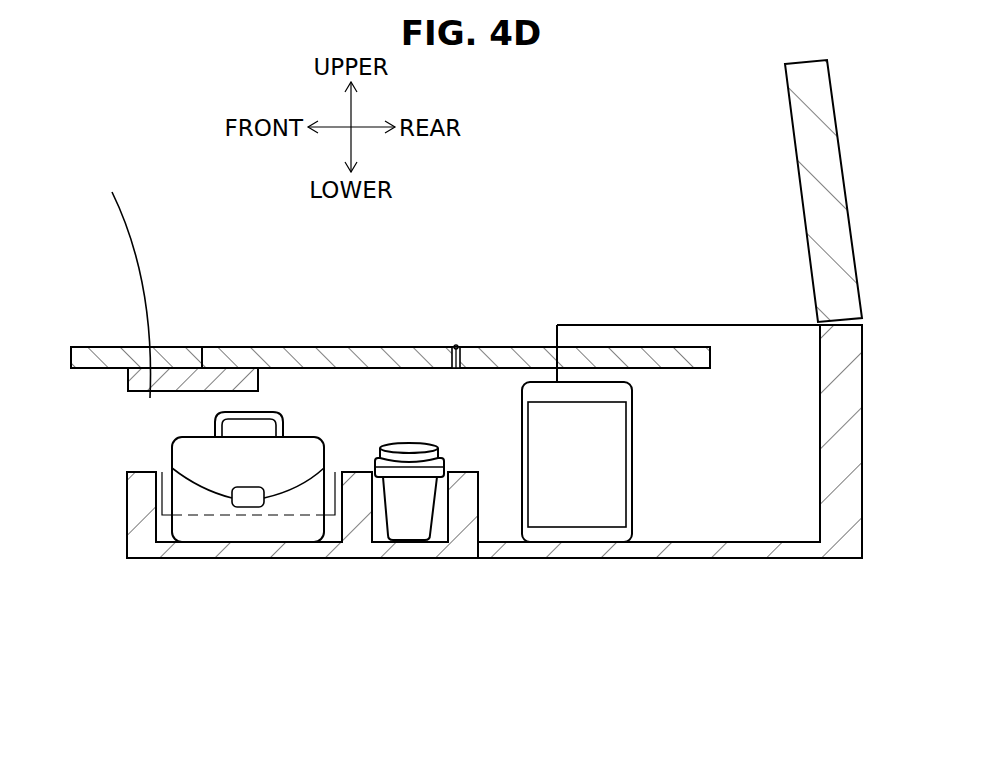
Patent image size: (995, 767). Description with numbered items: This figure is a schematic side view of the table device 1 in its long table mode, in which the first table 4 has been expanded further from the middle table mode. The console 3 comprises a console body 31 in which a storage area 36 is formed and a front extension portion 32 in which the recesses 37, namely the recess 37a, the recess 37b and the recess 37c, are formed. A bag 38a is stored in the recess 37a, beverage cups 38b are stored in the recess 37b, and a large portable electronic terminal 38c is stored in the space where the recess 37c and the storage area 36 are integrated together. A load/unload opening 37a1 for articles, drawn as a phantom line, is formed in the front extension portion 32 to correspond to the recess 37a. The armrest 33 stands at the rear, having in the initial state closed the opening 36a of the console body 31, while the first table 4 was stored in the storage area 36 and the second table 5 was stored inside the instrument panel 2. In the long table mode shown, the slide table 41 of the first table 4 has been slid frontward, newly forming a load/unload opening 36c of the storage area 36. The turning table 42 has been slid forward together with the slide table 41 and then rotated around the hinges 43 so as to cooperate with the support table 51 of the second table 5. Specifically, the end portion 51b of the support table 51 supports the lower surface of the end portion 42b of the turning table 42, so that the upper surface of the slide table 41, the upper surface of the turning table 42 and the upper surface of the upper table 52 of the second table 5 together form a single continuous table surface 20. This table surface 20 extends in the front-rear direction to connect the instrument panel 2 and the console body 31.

The table device 1 is at (463, 232).
The instrument panel 2 is at (135, 232).
The console 3 is at (440, 482).
The first table 4 is at (456, 296).
The second table 5 is at (108, 308).
The table surface 20 is at (310, 306).
The console body 31 is at (750, 550).
The front extension portion 32 is at (140, 514).
The armrest 33 is at (820, 130).
The storage area 36 is at (746, 468).
The opening 36a is at (613, 336).
The load/unload opening 36c is at (760, 385).
The recesses 37 is at (325, 568).
The recess 37a is at (333, 560).
The load/unload opening 37a1 is at (163, 478).
The recess 37b is at (445, 560).
The recess 37c is at (554, 558).
The bag 38a is at (303, 455).
The beverage cups 38b is at (412, 446).
The large portable electronic terminal 38c is at (633, 440).
The slide table 41 is at (521, 356).
The turning table 42 is at (327, 356).
The end portion 42b is at (237, 358).
The hinges 43 is at (453, 347).
The support table 51 is at (148, 358).
The end portion 51b is at (217, 381).
The upper table 52 is at (92, 358).